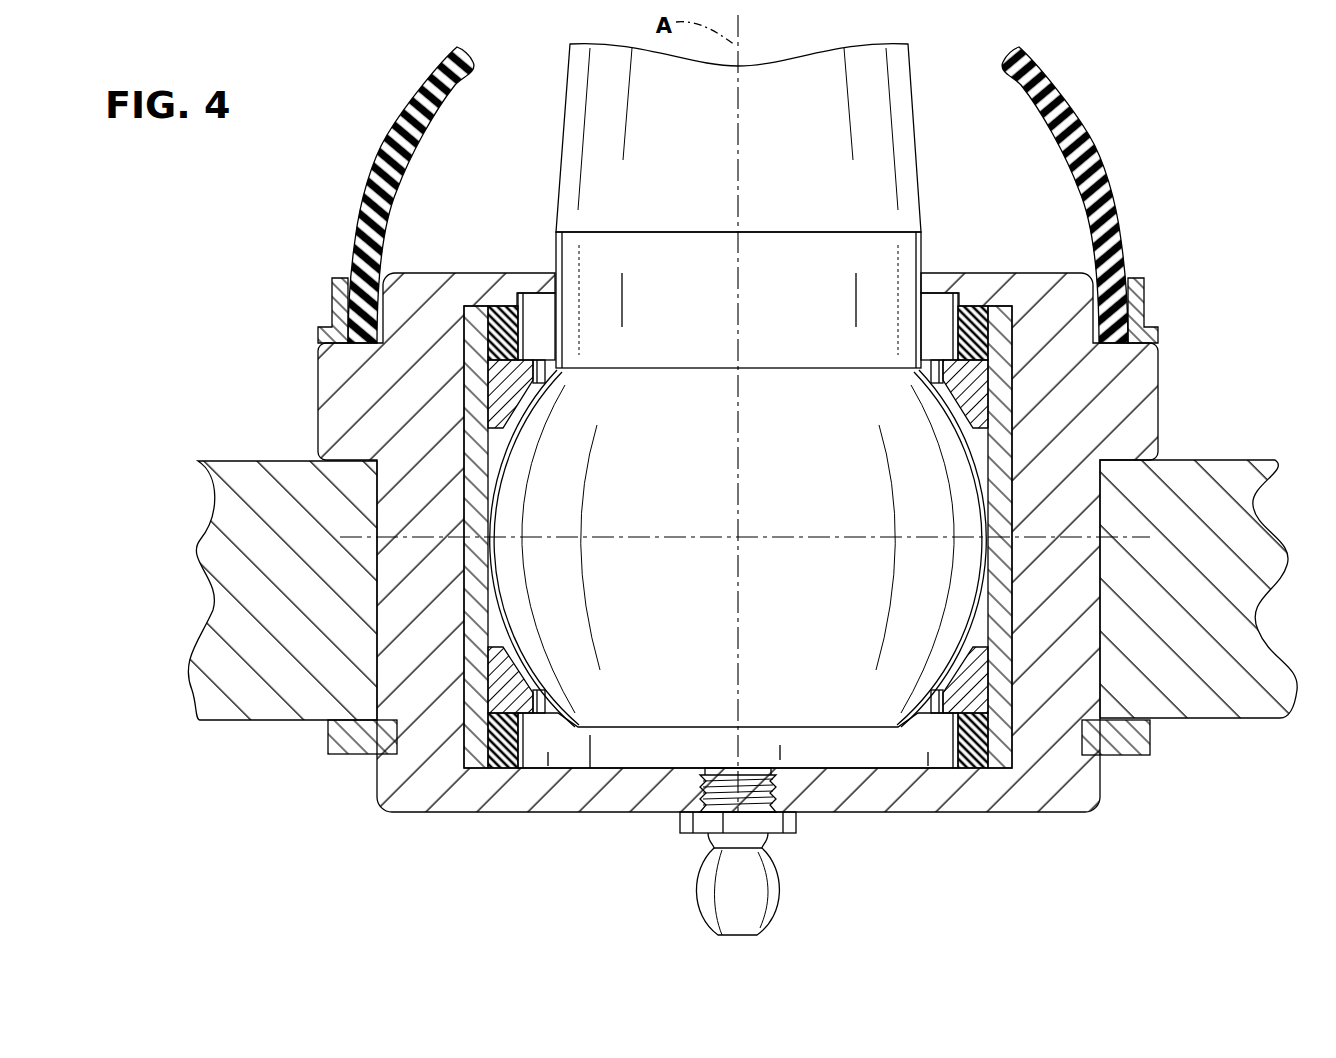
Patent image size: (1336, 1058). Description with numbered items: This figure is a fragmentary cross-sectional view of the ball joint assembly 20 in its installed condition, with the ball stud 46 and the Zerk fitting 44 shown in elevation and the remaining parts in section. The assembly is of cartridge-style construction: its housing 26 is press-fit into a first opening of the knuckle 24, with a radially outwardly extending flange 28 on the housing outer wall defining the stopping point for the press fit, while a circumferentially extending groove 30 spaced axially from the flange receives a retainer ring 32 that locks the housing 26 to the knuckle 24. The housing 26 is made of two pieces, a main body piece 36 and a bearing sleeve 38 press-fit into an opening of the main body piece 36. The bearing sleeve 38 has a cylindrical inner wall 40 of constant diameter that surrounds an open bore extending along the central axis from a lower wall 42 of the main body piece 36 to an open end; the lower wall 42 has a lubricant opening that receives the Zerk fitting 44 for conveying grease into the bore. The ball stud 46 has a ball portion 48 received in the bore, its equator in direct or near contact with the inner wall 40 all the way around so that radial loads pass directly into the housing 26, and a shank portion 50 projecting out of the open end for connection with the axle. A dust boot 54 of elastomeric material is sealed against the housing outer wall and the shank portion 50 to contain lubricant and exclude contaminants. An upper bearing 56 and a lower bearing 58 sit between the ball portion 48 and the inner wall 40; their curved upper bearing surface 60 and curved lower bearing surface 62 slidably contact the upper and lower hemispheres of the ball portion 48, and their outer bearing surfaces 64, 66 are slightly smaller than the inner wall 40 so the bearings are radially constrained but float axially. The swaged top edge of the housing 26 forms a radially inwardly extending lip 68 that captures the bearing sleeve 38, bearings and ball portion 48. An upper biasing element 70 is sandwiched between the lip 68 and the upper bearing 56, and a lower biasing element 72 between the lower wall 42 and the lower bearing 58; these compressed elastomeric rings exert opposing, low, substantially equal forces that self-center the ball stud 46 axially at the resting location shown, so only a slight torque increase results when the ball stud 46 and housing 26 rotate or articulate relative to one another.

The ball joint assembly 20 is at (348, 836).
The knuckle 24 is at (1217, 512).
The housing 26 is at (502, 836).
The radially outwardly extending flange 28 is at (1140, 425).
The circumferentially extending groove 30 is at (375, 740).
The retainer ring 32 is at (1130, 740).
The main body piece 36 is at (410, 593).
The bearing sleeve 38 is at (475, 383).
The inner wall 40 is at (510, 417).
The lower wall 42 is at (630, 762).
The Zerk fitting 44 is at (748, 895).
The ball stud 46 is at (781, 188).
The ball portion 48 is at (738, 548).
The shank portion 50 is at (738, 206).
The dust boot 54 is at (1085, 160).
The upper bearing 56 is at (976, 383).
The lower bearing 58 is at (980, 693).
The curved upper bearing surface 60 is at (950, 417).
The curved lower bearing surface 62 is at (957, 658).
The outer bearing surface 64 is at (486, 412).
The outer bearing surface 66 is at (493, 672).
The radially inwardly extending lip 68 is at (494, 310).
The upper biasing element 70 is at (533, 300).
The lower biasing element 72 is at (500, 762).